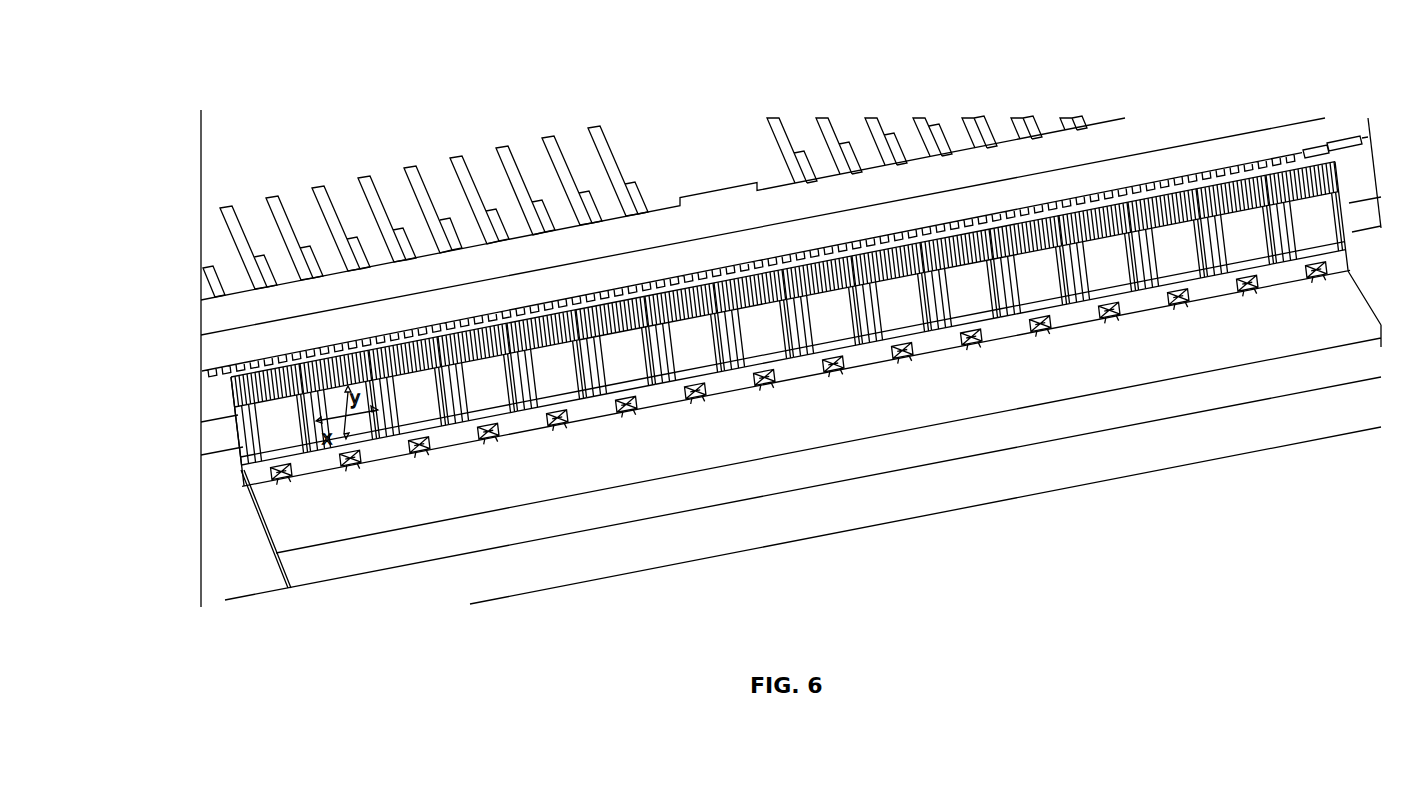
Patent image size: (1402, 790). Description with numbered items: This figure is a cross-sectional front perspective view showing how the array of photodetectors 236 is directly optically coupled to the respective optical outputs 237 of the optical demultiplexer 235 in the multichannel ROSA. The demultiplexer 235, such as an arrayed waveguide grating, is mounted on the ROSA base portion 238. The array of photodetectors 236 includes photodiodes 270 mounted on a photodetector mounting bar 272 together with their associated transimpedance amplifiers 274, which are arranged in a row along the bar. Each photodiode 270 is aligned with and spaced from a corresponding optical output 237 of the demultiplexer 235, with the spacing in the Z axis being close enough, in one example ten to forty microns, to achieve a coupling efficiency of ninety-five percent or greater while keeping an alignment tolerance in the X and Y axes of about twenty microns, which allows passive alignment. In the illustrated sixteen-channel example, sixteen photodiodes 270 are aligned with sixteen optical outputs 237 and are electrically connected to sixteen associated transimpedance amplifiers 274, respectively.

The demultiplexer 235 is at (283, 563).
The array of photodetectors 236 is at (768, 366).
The optical outputs 237 is at (292, 478).
The ROSA base portion 238 is at (722, 540).
The photodiodes 270 is at (282, 477).
The photodetector mounting bar 272 is at (246, 470).
The transimpedance amplifiers 274 is at (265, 428).